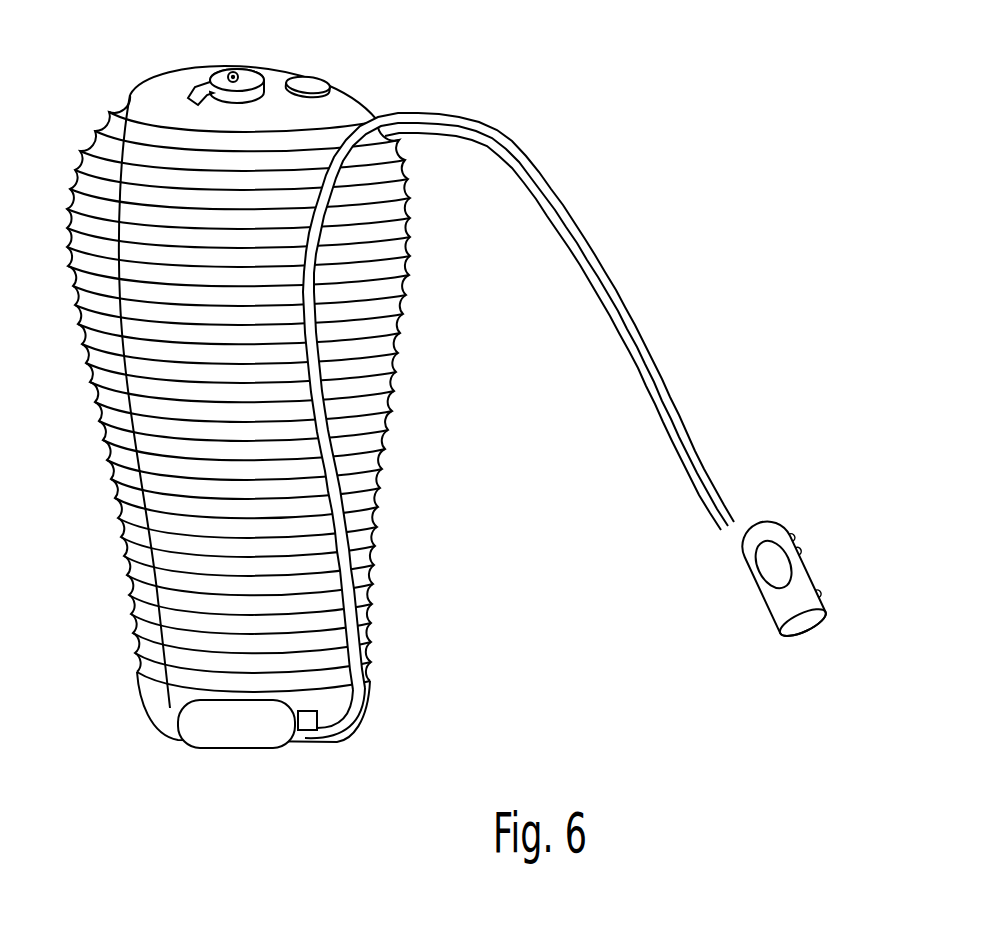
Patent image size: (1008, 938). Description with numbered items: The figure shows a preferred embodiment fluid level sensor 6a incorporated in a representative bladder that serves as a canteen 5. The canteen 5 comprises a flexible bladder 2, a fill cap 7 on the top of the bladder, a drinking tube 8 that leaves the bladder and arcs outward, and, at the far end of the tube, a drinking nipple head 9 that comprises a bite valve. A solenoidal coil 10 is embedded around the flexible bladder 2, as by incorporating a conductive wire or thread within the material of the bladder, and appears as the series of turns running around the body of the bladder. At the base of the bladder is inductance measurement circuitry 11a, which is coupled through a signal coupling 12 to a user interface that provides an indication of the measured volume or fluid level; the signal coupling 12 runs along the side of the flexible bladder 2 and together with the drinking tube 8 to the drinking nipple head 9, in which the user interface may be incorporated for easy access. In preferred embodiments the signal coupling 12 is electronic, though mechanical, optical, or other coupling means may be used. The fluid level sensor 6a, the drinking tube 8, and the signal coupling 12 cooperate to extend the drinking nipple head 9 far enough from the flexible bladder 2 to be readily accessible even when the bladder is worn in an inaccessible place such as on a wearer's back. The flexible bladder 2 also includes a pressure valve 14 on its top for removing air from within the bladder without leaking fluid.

The flexible bladder 2 is at (273, 387).
The canteen 5 is at (732, 97).
The fluid level sensor 6a is at (690, 693).
The fill cap 7 is at (217, 65).
The drinking tube 8 is at (715, 428).
The drinking nipple head 9 is at (795, 574).
The solenoidal coil 10 is at (398, 372).
The inductance measurement circuitry 11a is at (208, 723).
The signal coupling 12 is at (657, 362).
The pressure valve 14 is at (297, 70).